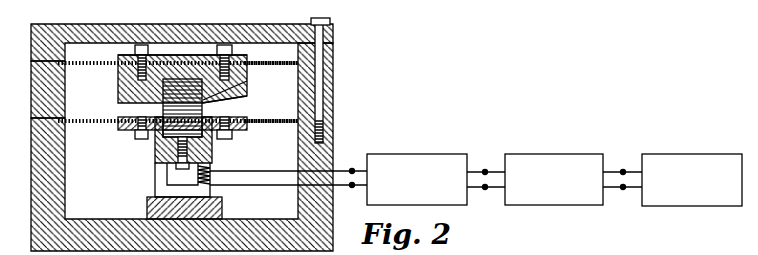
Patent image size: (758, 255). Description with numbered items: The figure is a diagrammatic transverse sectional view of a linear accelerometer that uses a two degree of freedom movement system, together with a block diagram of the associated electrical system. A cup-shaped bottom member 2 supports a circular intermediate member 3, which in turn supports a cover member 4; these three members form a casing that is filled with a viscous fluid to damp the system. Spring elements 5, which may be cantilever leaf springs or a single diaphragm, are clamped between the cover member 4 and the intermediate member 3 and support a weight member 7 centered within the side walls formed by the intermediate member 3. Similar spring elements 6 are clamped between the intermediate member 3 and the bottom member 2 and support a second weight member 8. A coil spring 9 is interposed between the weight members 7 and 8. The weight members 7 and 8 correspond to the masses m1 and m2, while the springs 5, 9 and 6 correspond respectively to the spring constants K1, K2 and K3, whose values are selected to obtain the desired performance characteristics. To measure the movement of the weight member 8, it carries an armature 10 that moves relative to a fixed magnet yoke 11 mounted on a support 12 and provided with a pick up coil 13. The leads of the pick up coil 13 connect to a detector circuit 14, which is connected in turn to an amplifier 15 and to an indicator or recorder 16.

The cup-shaped bottom member 2 is at (38, 165).
The circular intermediate member 3 is at (33, 97).
The cover member 4 is at (36, 41).
The spring elements 5 is at (72, 66).
The spring elements 6 is at (91, 119).
The weight member 7 is at (118, 81).
The weight member 8 is at (118, 132).
The coil spring 9 is at (228, 81).
The armature 10 is at (155, 155).
The magnet yoke 11 is at (160, 168).
The support 12 is at (219, 211).
The pick up coil 13 is at (218, 177).
The detector circuit 14 is at (417, 178).
The amplifier 15 is at (535, 178).
The indicator or recorder 16 is at (672, 179).
The mass m1 is at (163, 61).
The mass m2 is at (233, 128).
The spring constant K1 is at (255, 62).
The spring constant K2 is at (235, 105).
The spring constant K3 is at (288, 124).